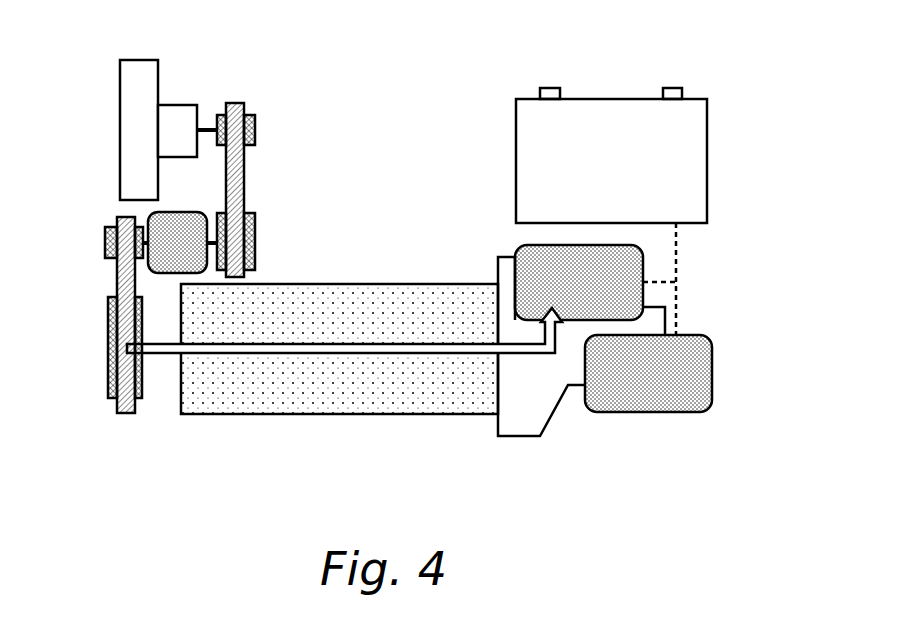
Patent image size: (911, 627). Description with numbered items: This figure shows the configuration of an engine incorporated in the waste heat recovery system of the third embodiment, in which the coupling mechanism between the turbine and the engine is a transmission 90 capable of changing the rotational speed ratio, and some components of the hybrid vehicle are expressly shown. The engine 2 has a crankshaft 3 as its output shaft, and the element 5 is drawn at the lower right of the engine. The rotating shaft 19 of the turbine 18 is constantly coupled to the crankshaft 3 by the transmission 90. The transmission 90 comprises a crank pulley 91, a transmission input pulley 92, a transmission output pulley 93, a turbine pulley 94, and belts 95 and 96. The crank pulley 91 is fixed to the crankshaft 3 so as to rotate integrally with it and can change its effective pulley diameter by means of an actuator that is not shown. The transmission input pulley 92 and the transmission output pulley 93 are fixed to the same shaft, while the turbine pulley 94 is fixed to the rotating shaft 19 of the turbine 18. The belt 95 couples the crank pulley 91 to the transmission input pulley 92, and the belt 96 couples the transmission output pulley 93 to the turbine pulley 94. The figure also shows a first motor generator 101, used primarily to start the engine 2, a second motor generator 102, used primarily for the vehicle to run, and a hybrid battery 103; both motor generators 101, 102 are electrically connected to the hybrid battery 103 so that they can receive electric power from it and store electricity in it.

The engine 2 is at (390, 284).
The crankshaft 3 is at (170, 356).
The frame 5 is at (518, 438).
The turbine 18 is at (120, 80).
The rotating shaft 19 is at (203, 126).
The transmission 90 is at (148, 213).
The crank pulley 91 is at (108, 342).
The transmission input pulley 92 is at (105, 242).
The transmission output pulley 93 is at (255, 242).
The turbine pulley 94 is at (255, 130).
The belt 95 is at (130, 413).
The belt 96 is at (244, 178).
The first motor generator 101 is at (643, 262).
The second motor generator 102 is at (712, 370).
The hybrid battery 103 is at (707, 153).